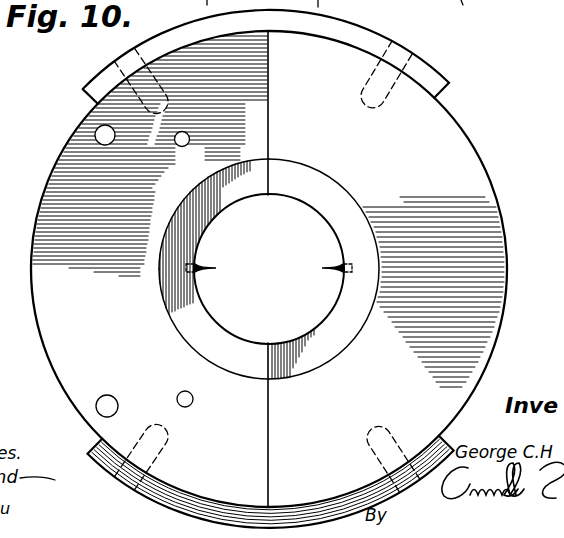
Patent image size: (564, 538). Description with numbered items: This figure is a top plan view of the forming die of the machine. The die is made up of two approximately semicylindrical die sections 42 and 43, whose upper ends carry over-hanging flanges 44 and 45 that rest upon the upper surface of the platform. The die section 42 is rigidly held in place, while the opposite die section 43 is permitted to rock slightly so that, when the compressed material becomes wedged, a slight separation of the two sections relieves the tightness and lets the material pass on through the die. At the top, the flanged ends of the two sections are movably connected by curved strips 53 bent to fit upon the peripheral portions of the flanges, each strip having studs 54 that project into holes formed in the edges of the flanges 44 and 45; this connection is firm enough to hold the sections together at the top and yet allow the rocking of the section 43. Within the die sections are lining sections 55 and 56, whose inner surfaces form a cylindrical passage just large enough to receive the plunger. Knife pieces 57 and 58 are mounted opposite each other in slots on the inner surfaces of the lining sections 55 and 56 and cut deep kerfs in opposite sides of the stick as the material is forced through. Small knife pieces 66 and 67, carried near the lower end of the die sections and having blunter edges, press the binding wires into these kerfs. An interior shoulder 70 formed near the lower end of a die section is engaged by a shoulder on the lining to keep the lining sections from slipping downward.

The die section 42 is at (162, 331).
The die section 43 is at (362, 204).
The over-hanging flange 44 is at (269, 269).
The over-hanging flange 45 is at (386, 269).
The curved strip 53 is at (188, 510).
The stud 54 is at (204, 458).
The lining section 55 is at (222, 202).
The lining section 56 is at (343, 302).
The knife piece 57 is at (203, 267).
The knife piece 58 is at (332, 266).
The small knife piece 66 is at (205, 0).
The small knife piece 67 is at (355, 1).
The interior shoulder 70 is at (133, 0).